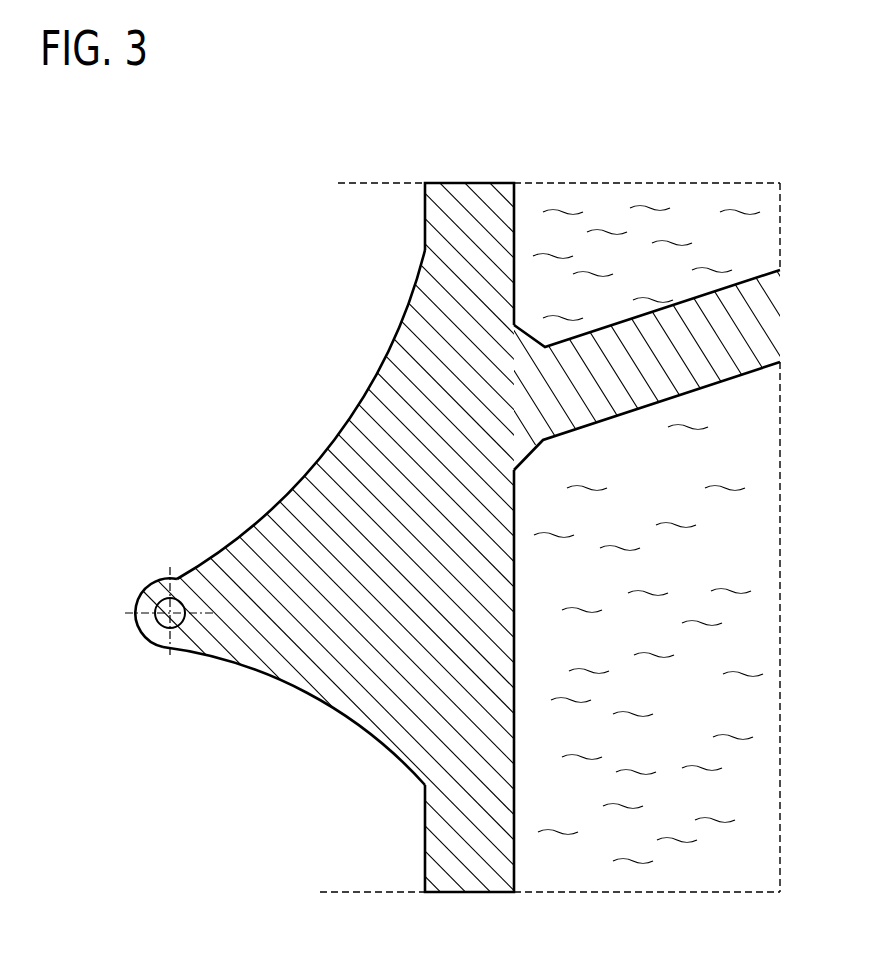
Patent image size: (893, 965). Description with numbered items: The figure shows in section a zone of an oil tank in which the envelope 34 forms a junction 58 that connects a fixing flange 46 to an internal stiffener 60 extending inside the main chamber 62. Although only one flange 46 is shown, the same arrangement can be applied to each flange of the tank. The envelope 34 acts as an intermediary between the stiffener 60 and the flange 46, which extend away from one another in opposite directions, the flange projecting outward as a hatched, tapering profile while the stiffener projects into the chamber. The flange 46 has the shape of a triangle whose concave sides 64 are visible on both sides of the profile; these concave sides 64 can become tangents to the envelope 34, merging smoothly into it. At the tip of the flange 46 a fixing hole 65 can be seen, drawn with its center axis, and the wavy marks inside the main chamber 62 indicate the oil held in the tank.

The envelope 34 is at (340, 316).
The fixing flange 46 is at (277, 650).
The junction 58 is at (216, 337).
The internal stiffener 60 is at (672, 385).
The main chamber 62 is at (584, 806).
The concave sides 64 is at (261, 513).
The fixing hole 65 is at (159, 602).